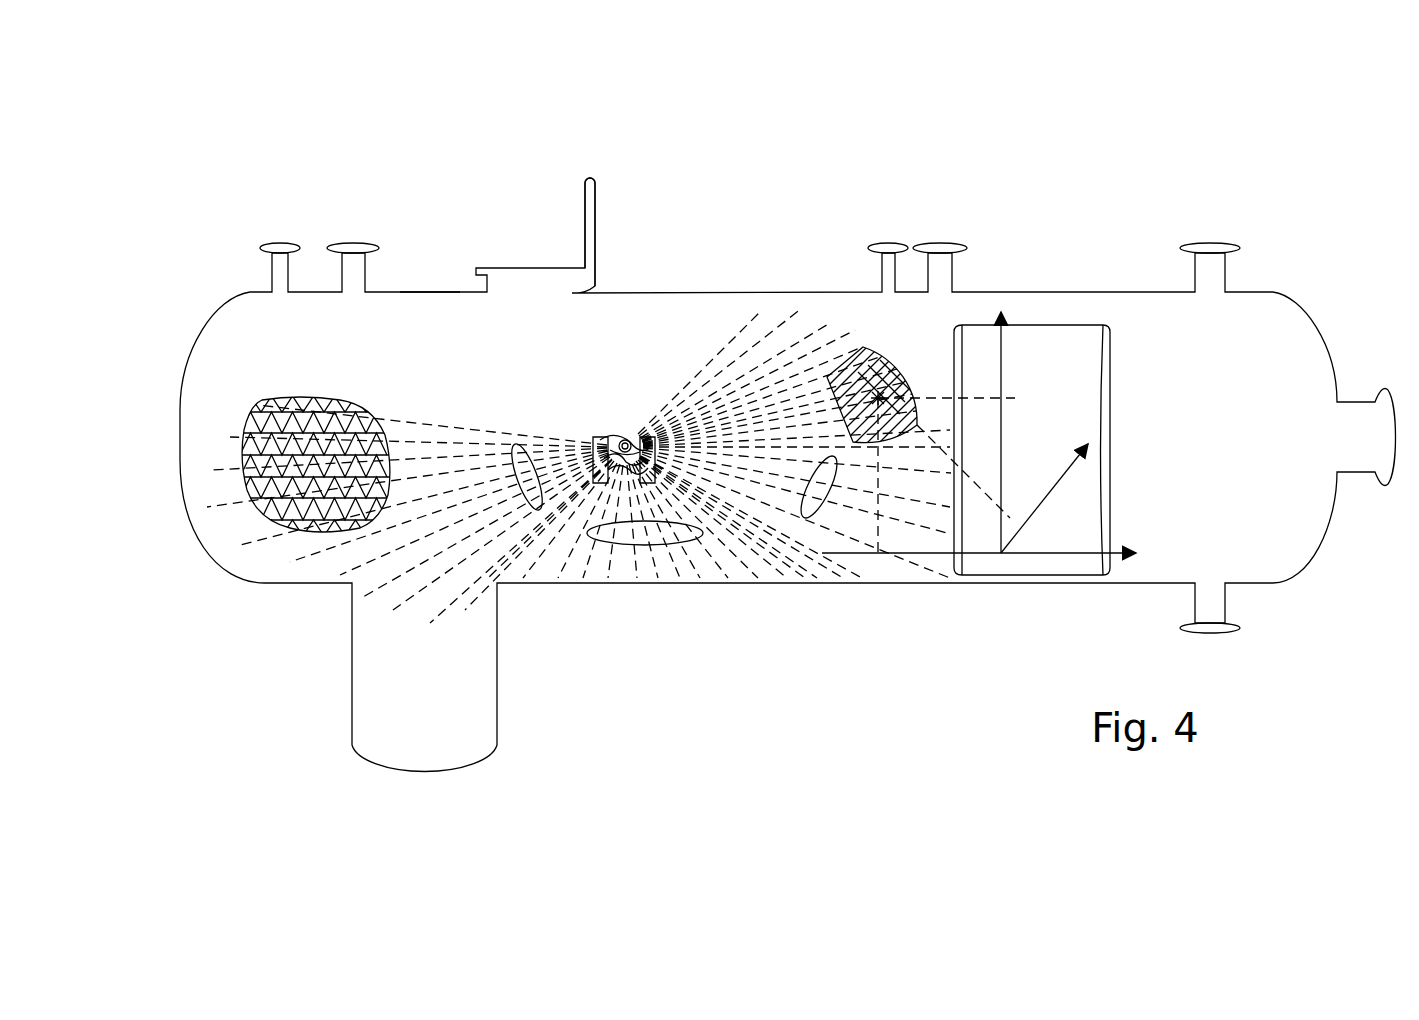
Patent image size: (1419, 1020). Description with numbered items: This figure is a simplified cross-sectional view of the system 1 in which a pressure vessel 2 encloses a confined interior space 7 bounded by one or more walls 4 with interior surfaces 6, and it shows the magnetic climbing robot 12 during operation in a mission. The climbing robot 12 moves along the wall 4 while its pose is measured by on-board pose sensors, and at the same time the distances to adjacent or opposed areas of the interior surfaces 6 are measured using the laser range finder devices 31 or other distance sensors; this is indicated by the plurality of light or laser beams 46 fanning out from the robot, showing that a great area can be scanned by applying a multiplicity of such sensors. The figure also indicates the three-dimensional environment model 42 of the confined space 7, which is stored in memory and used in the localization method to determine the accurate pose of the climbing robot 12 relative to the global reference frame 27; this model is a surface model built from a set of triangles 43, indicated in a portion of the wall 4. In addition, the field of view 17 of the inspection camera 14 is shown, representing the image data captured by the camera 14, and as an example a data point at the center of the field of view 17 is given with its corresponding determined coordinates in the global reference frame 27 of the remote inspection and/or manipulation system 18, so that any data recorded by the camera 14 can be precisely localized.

The system 1 is at (188, 188).
The pressure vessel 2 is at (212, 292).
The wall 4 is at (424, 290).
The interior surface 6 is at (686, 290).
The interior space 7 is at (752, 327).
The magnetic climbing robot 12 is at (618, 392).
The inspection camera 14 is at (622, 482).
The field of view 17 is at (855, 395).
The remote inspection and/or manipulation system 18 is at (579, 366).
The global reference frame 27 is at (1060, 372).
The laser range finder device 31 is at (626, 440).
The 3D environment model 42 is at (245, 534).
The set of triangles 43 is at (298, 530).
The light or laser beam 46 is at (538, 506).